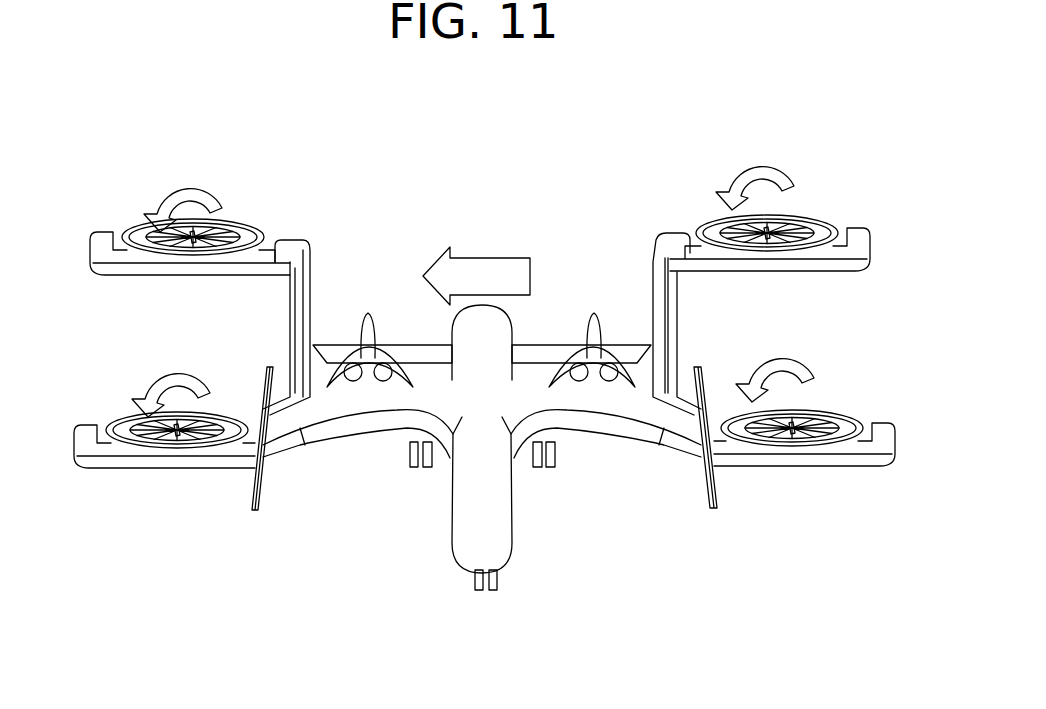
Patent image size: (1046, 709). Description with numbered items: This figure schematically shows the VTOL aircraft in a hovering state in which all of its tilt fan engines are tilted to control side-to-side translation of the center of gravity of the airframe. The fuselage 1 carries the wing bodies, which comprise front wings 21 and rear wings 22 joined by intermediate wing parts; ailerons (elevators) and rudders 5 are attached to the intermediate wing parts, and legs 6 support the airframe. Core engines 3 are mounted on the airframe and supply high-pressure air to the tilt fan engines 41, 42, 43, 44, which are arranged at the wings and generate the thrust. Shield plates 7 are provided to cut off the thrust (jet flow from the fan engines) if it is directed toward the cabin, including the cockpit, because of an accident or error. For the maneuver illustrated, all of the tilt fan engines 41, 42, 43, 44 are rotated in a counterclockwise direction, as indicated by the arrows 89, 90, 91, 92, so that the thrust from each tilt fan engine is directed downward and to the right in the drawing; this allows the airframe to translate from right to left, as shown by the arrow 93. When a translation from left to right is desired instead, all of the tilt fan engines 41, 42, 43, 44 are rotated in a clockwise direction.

The fuselage 1 is at (480, 528).
The core engines 3 is at (367, 315).
The ailerons (elevators) and rudders 5 is at (306, 294).
The legs 6 is at (408, 457).
The shield plates 7 is at (300, 318).
The front wings 21 is at (787, 512).
The rear wings 22 is at (673, 238).
The tilt fan engine 41 is at (127, 423).
The tilt fan engine 42 is at (843, 419).
The tilt fan engine 43 is at (129, 240).
The tilt fan engine 44 is at (818, 228).
The arrow 89 is at (188, 188).
The arrow 90 is at (176, 372).
The arrow 91 is at (755, 164).
The arrow 92 is at (780, 356).
The arrow 93 is at (478, 272).